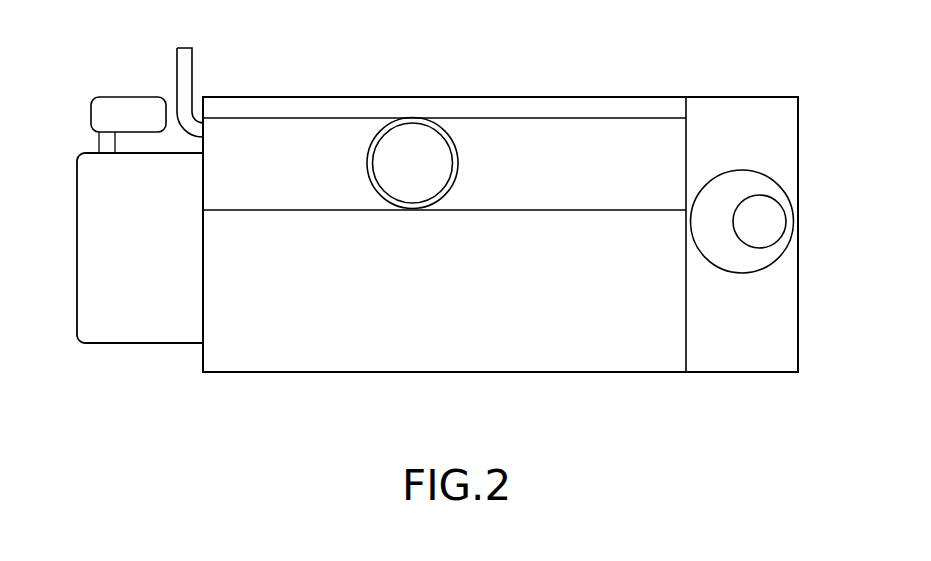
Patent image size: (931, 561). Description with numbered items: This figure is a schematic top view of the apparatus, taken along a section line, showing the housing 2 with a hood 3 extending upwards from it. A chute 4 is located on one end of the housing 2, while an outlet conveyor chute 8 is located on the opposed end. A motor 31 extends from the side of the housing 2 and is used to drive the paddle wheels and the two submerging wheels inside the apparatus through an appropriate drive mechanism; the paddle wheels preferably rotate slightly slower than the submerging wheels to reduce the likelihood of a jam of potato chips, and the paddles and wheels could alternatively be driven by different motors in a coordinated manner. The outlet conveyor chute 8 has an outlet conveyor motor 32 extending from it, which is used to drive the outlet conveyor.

The housing 2 is at (423, 373).
The hood 3 is at (443, 132).
The chute 4 is at (763, 267).
The outlet conveyor chute 8 is at (88, 217).
The motor 31 is at (185, 47).
The outlet conveyor motor 32 is at (130, 103).